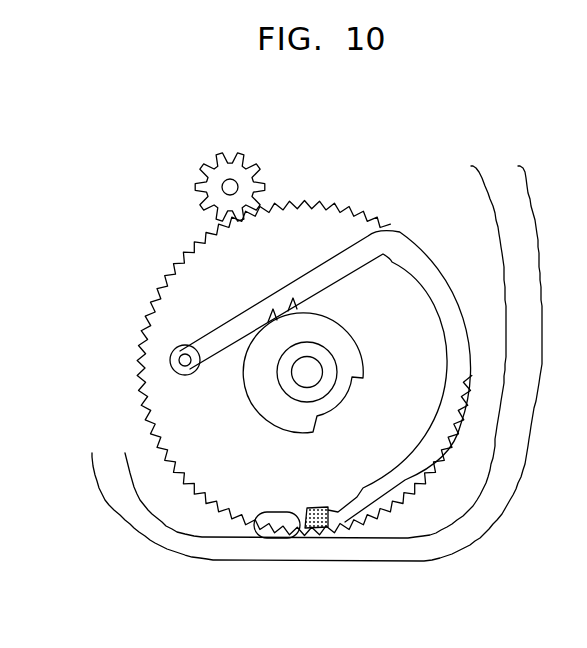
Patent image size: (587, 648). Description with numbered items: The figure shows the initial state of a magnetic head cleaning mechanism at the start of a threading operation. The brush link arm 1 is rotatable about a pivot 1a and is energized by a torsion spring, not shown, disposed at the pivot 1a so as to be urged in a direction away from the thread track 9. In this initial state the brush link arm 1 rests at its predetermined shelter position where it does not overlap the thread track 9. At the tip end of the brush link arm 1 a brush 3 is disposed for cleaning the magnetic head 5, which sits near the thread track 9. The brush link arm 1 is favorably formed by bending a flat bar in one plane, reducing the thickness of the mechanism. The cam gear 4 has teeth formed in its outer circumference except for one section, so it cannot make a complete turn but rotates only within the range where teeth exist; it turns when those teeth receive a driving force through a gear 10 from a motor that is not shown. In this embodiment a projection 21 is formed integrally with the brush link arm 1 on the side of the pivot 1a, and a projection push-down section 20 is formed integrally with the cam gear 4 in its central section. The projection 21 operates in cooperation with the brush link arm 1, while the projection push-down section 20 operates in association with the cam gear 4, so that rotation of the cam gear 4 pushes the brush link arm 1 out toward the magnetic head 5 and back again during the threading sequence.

The brush link arm 1 is at (370, 240).
The pivot 1a is at (171, 360).
The brush 3 is at (332, 508).
The cam gear 4 is at (317, 205).
The magnetic head 5 is at (272, 538).
The thread track 9 is at (383, 550).
The gear 10 is at (216, 180).
The projection push-down section 20 is at (366, 344).
The projection 21 is at (280, 315).